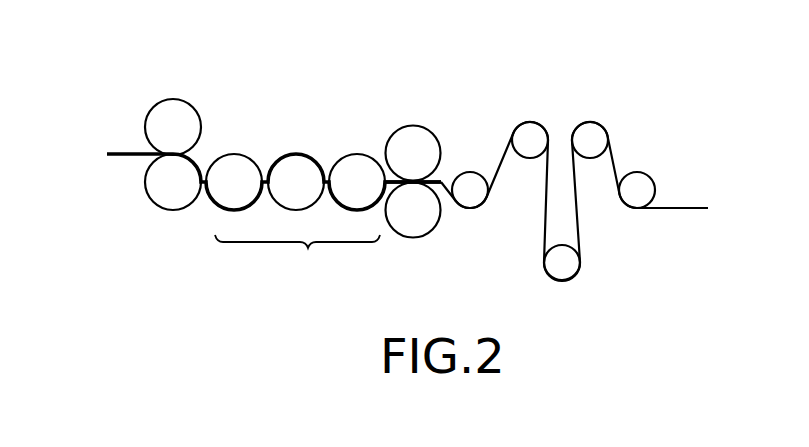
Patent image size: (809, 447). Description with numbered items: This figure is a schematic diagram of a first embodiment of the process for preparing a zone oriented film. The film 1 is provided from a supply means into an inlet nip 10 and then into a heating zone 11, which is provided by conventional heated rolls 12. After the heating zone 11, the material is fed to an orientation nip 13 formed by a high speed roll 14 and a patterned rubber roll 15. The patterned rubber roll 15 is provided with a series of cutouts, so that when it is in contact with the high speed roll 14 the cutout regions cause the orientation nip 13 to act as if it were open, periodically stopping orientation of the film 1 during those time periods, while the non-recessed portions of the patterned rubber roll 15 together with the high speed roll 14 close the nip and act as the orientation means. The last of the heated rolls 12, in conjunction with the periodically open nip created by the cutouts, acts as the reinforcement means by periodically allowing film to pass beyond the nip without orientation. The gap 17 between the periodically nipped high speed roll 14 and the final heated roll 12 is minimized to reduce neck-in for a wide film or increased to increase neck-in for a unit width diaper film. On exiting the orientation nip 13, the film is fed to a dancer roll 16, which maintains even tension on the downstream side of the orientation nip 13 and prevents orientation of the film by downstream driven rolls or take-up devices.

The film 1 is at (110, 141).
The inlet nip 10 is at (170, 105).
The heating zone 11 is at (297, 256).
The heated rolls 12 is at (345, 167).
The orientation nip 13 is at (394, 97).
The high speed roll 14 is at (427, 215).
The patterned rubber roll 15 is at (427, 147).
The dancer roll 16 is at (570, 265).
The gap 17 is at (383, 160).